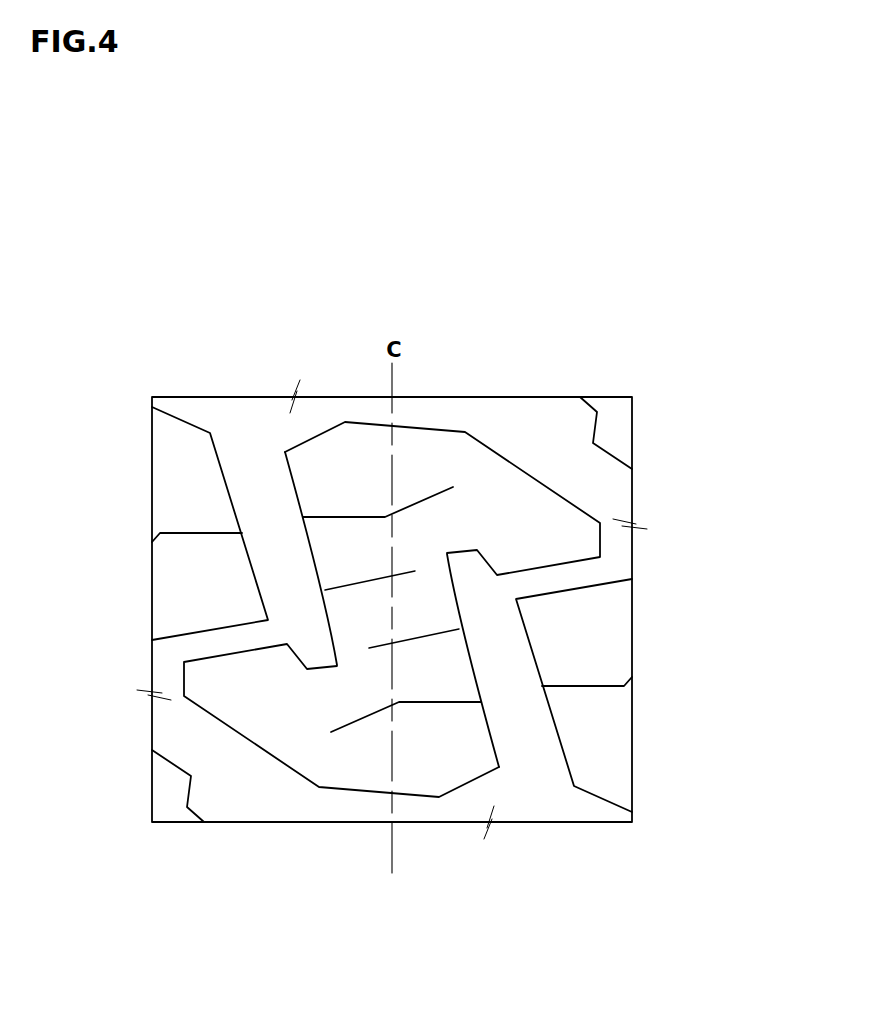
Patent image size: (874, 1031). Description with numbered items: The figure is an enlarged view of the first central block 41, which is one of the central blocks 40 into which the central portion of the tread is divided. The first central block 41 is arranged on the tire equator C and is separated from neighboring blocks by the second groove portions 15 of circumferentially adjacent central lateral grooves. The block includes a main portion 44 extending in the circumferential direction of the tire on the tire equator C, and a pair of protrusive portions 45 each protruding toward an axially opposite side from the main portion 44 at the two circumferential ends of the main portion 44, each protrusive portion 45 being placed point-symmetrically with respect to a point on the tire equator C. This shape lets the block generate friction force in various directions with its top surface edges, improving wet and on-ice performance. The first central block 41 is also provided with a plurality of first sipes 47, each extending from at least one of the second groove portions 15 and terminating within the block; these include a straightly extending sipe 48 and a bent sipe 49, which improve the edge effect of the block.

The second groove portion 15 is at (277, 553).
The central block 40 is at (392, 503).
The first central block 41 is at (418, 553).
The main portion 44 is at (370, 480).
The protrusive portion 45 is at (527, 518).
The first sipe 47 is at (391, 612).
The straightly extending sipe 48 is at (375, 578).
The bent sipe 49 is at (352, 517).